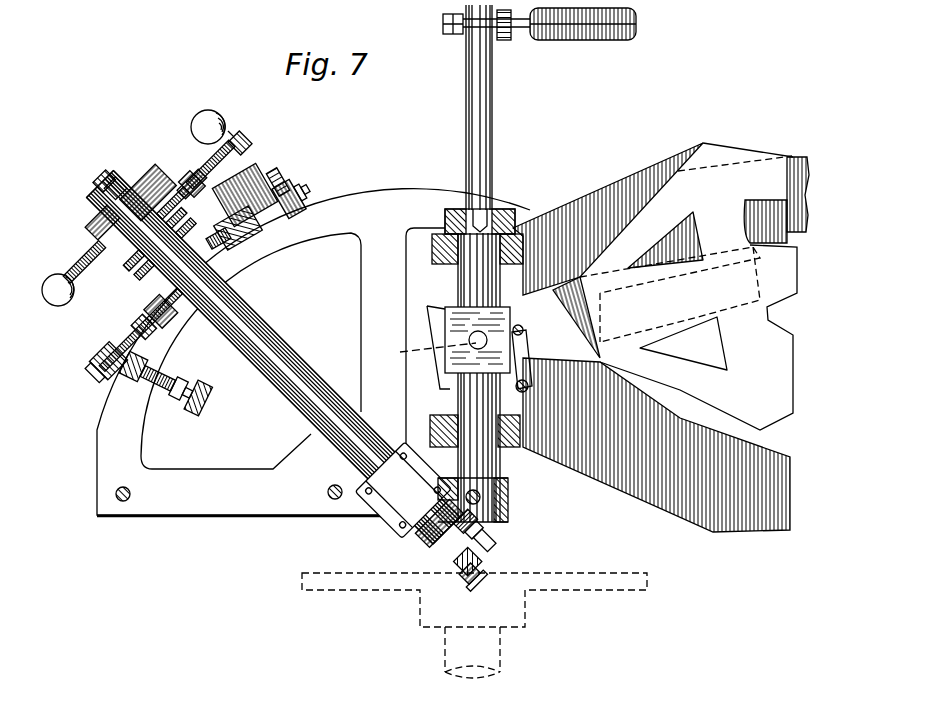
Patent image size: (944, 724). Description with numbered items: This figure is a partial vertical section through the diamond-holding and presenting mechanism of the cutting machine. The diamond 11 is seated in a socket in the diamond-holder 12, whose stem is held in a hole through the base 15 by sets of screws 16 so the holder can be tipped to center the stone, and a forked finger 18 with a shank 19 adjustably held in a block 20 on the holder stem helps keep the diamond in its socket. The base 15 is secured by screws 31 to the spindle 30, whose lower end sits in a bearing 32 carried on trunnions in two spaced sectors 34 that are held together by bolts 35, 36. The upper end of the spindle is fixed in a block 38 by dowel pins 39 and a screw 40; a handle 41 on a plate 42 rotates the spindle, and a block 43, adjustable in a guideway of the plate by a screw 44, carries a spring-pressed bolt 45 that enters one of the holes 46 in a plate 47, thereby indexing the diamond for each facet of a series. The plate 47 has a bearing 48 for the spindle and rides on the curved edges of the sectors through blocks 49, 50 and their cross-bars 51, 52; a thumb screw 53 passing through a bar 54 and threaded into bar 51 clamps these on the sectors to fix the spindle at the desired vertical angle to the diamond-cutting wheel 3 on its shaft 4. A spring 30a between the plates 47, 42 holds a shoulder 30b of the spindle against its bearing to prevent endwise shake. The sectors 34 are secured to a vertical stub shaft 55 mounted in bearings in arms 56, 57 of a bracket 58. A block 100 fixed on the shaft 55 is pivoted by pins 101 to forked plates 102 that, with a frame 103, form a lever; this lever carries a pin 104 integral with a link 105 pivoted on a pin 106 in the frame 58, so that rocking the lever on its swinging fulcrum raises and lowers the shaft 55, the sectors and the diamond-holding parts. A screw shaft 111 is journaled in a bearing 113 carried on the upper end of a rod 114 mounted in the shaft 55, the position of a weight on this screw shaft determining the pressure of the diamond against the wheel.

The diamond-cutting wheel 3 is at (648, 581).
The shaft 4 is at (492, 658).
The diamond 11 is at (472, 578).
The diamond-holder 12 is at (462, 572).
The base 15 is at (416, 550).
The screws 16 is at (428, 556).
The finger 18 is at (480, 563).
The shank 19 is at (486, 552).
The block 20 is at (478, 532).
The spindle 30 is at (287, 362).
The spring 30a is at (143, 264).
The shoulder 30b is at (481, 492).
The screws 31 is at (510, 500).
The bearing 32 is at (388, 515).
The sectors 34 is at (387, 192).
The bolt 35 is at (120, 500).
The bolt 36 is at (330, 497).
The block 38 is at (143, 166).
The dowel pins 39 is at (108, 176).
The screw 40 is at (108, 187).
The handle 41 is at (57, 296).
The plate 42 is at (84, 288).
The block 43 is at (204, 177).
The screw 44 is at (186, 181).
The spring-pressed bolt 45 is at (224, 130).
The holes 46 is at (283, 178).
The plate 47 is at (276, 170).
The bearing 48 is at (173, 292).
The block 49 is at (110, 366).
The block 50 is at (292, 192).
The cross-bar 51 is at (118, 374).
The cross-bar 52 is at (306, 200).
The thumb screw 53 is at (147, 382).
The bar 54 is at (168, 394).
The vertical stub shaft 55 is at (466, 275).
The arm 56 is at (520, 238).
The arm 57 is at (440, 414).
The bracket 58 is at (638, 188).
The block 100 is at (500, 318).
The pins 101 is at (425, 350).
The forked plates 102 is at (437, 322).
The frame 103 is at (705, 144).
The pin 104 is at (524, 330).
The link 105 is at (528, 360).
The pin 106 is at (529, 386).
The screw shaft 111 is at (632, 26).
The bearing 113 is at (508, 40).
The rod 114 is at (497, 118).